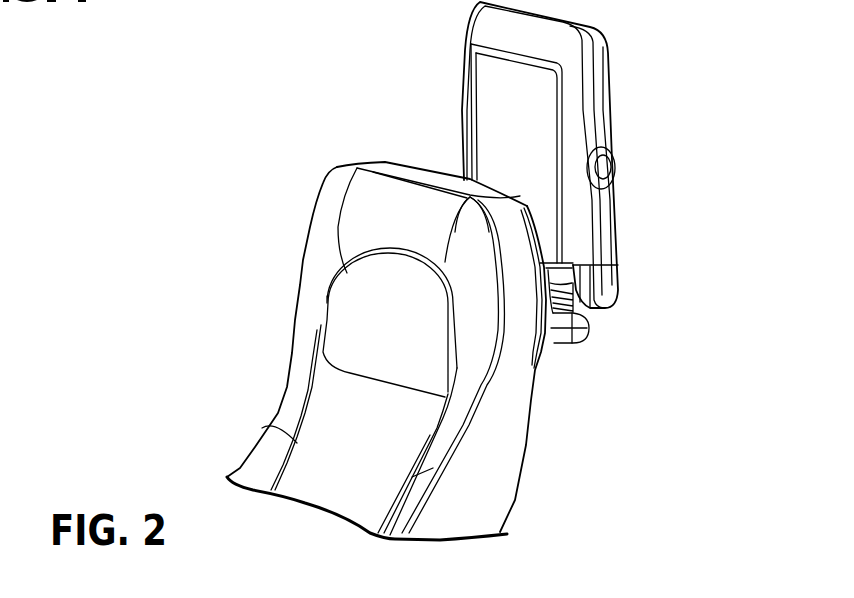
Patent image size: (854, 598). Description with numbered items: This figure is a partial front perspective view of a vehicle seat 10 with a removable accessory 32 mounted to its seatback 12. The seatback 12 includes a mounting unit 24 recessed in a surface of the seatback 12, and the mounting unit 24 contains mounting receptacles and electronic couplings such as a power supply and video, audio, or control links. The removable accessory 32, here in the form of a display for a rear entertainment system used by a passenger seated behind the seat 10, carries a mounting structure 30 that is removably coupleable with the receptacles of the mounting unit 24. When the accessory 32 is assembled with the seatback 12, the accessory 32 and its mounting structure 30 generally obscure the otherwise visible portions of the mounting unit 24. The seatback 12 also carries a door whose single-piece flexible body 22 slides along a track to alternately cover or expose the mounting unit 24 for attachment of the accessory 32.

The vehicle seat 10 is at (362, 128).
The seatback 12 is at (298, 285).
The flexible body 22 is at (532, 417).
The mounting unit 24 is at (535, 369).
The mounting structure 30 is at (580, 343).
The removable accessory 32 is at (632, 228).